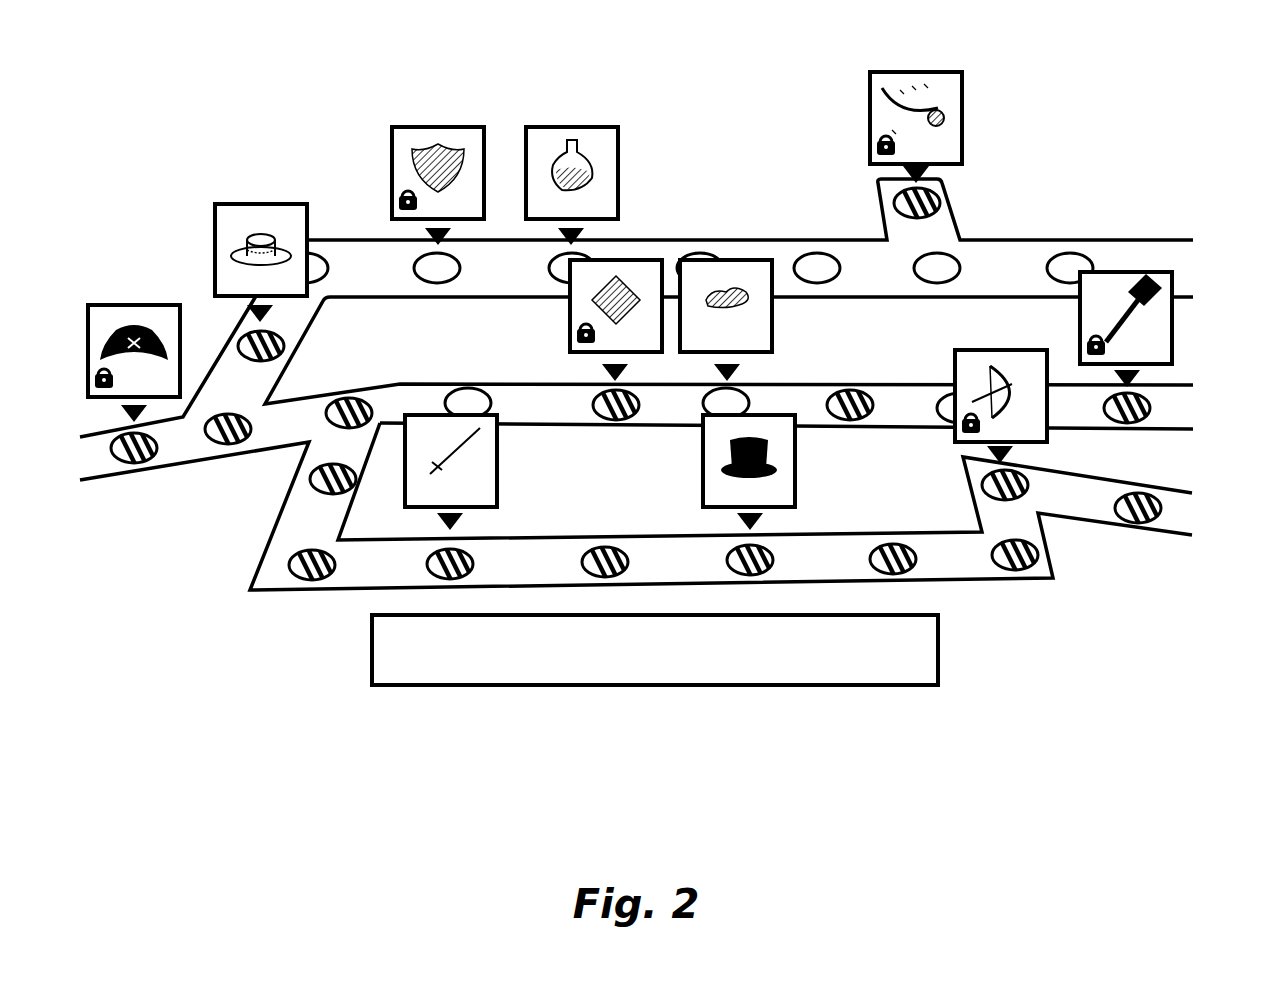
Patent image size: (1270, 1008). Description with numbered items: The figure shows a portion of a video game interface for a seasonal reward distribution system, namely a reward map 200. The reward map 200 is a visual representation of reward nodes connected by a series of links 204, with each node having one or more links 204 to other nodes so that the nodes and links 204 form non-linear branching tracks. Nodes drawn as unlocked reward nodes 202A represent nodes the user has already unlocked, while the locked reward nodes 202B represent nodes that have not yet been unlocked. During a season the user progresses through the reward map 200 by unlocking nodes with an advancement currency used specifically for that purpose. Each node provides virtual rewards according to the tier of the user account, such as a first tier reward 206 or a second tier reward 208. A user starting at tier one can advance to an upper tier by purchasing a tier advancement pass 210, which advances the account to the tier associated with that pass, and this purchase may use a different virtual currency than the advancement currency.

The reward map 200 is at (313, 32).
The unlocked reward node 202A is at (1082, 258).
The locked reward node 202B is at (1142, 492).
The link 204 is at (1004, 255).
The first tier reward 206 is at (561, 127).
The second tier reward 208 is at (963, 72).
The tier advancement pass 210 is at (643, 685).